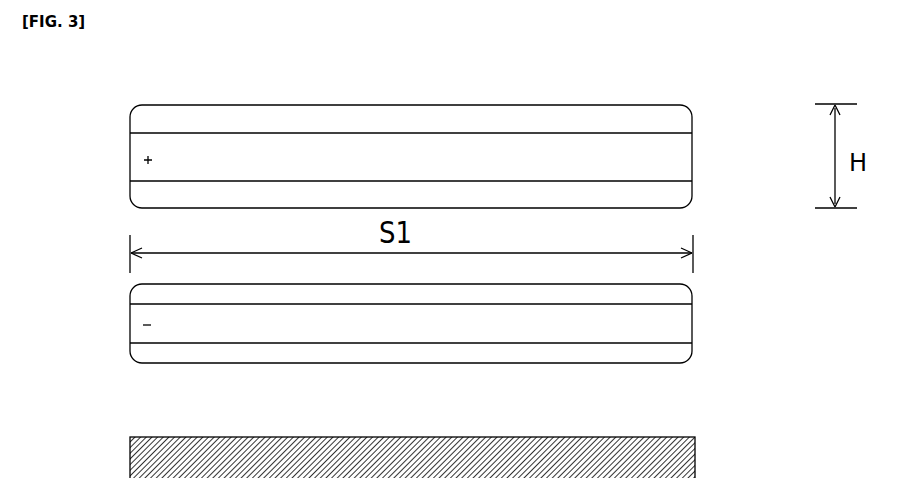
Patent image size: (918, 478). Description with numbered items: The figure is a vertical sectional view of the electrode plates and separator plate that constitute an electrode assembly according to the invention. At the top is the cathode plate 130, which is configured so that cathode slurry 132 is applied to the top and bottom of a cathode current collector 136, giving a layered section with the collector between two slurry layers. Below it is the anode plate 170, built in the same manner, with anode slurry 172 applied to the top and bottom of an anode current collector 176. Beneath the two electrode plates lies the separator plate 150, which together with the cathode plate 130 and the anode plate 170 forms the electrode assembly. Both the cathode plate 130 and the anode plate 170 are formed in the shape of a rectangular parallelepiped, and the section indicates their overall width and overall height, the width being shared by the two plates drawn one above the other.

The cathode plate 130 is at (718, 150).
The cathode slurry 132 is at (130, 116).
The cathode current collector 136 is at (144, 165).
The anode plate 170 is at (718, 318).
The anode slurry 172 is at (140, 294).
The anode current collector 176 is at (140, 338).
The separator plate 150 is at (718, 454).